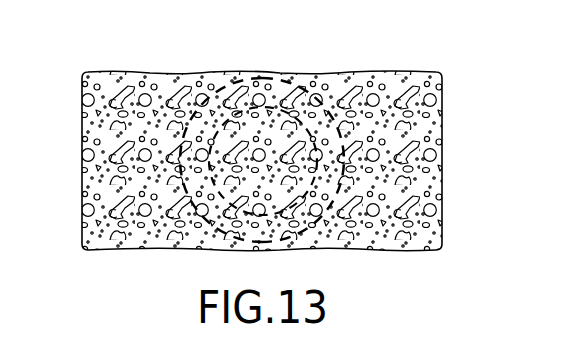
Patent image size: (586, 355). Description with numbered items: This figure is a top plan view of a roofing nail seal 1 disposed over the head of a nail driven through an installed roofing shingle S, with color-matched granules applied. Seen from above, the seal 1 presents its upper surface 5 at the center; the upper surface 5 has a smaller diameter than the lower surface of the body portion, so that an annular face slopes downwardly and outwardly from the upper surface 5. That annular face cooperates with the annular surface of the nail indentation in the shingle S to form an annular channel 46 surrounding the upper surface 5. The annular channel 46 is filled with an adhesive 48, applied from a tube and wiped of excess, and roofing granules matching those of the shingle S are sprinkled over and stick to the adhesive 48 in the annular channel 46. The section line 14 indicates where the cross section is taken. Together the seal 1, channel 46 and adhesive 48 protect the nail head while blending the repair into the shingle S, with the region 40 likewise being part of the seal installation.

The roofing nail seal 1 is at (306, 117).
The adhesive 48 is at (227, 113).
The annular channel 46 is at (197, 160).
The recess 40 is at (347, 186).
The upper surface 5 is at (269, 172).
The roofing shingle S is at (414, 113).
The section line 14 is at (72, 175).